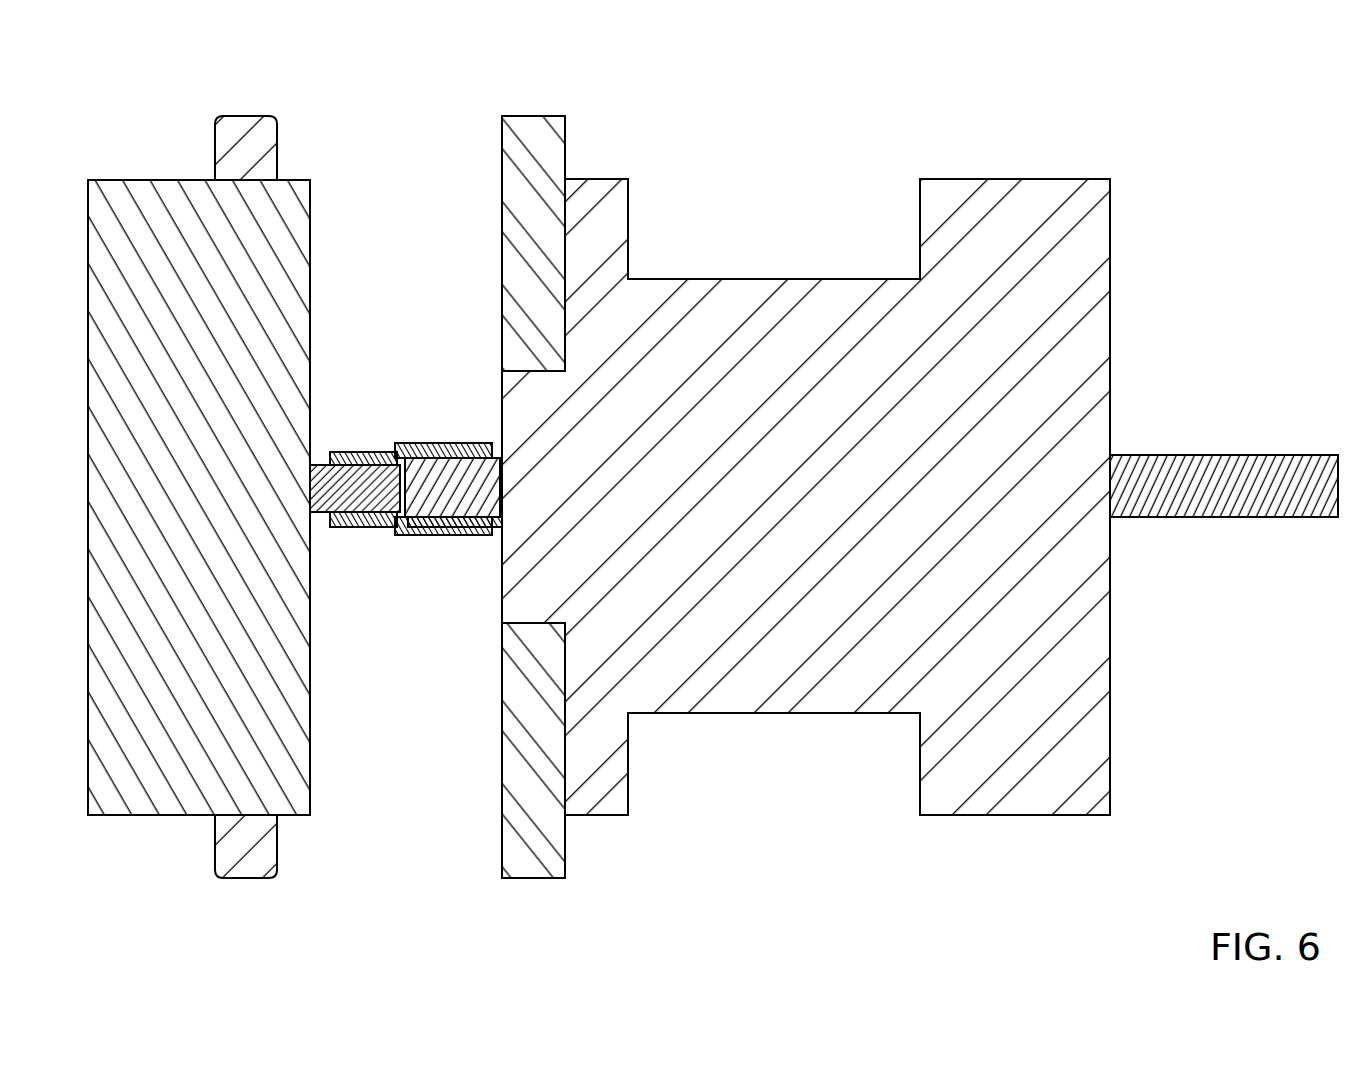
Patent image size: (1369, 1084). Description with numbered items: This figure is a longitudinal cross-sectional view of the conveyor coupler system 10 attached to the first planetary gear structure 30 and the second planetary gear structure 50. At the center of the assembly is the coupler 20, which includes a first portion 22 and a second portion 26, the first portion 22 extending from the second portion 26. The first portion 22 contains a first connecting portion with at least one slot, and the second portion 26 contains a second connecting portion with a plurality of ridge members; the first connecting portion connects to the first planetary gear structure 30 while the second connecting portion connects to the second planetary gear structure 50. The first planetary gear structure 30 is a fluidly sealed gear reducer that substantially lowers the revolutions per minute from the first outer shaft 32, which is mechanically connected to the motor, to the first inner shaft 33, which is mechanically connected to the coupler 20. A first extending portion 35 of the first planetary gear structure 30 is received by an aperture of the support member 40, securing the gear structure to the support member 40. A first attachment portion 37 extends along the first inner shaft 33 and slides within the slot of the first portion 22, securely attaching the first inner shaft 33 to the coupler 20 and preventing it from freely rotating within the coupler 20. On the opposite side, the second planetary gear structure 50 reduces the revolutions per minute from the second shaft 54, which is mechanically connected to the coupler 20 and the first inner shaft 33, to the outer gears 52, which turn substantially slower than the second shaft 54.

The conveyor coupler system 10 is at (1180, 142).
The coupler 20 is at (386, 528).
The first portion 22 is at (437, 443).
The second portion 26 is at (382, 452).
The first planetary gear structure 30 is at (750, 295).
The first outer shaft 32 is at (1213, 455).
The first inner shaft 33 is at (463, 528).
The first extending portion 35 is at (512, 410).
The first attachment portion 37 is at (432, 522).
The support member 40 is at (555, 158).
The second planetary gear structure 50 is at (142, 196).
The outer gears 52 is at (277, 118).
The second shaft 54 is at (327, 527).